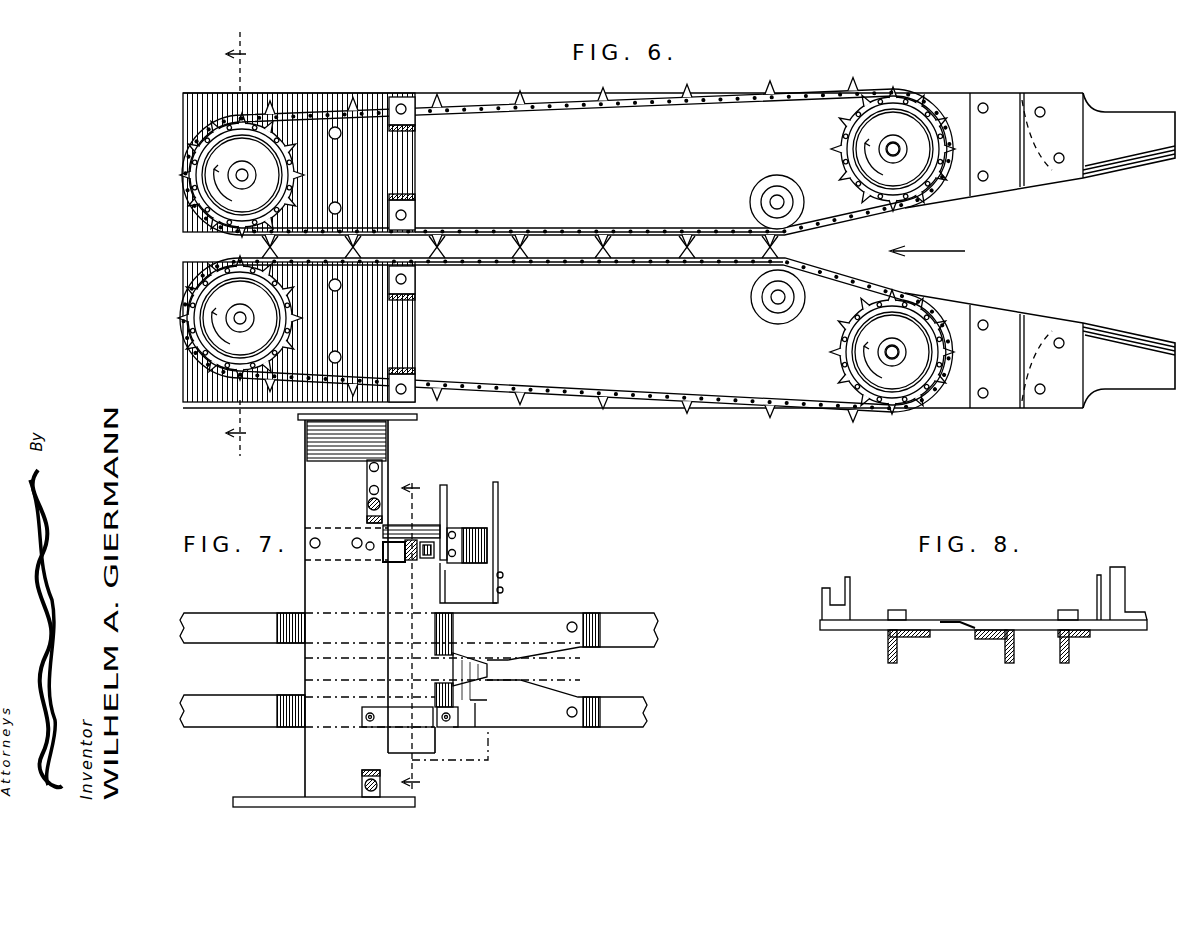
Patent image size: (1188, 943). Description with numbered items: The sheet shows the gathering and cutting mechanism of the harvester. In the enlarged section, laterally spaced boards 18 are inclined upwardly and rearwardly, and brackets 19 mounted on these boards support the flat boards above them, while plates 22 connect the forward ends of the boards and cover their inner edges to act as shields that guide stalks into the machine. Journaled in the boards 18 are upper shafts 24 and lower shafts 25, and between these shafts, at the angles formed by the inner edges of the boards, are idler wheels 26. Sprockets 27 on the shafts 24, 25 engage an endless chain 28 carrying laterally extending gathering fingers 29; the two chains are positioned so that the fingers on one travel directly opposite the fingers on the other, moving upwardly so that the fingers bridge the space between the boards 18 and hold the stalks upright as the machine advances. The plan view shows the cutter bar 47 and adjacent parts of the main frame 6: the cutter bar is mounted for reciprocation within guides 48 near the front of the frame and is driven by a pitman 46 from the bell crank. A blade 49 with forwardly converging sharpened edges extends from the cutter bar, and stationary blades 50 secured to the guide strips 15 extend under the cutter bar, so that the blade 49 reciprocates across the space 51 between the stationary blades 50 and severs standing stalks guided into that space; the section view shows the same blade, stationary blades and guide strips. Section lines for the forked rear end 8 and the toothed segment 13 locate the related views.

In FIG. 7, the main frame 6 is at (305, 475).
In FIG. 7, the forked rear end 8 is at (411, 634).
In FIG. 6, the toothed segment 13 is at (235, 254).
In FIG. 7, the guide strips 15 is at (660, 630).
In FIG. 8, the guide strips 15 is at (888, 656).
In FIG. 6, the boards 18 is at (633, 250).
In FIG. 6, the brackets 19 is at (405, 196).
In FIG. 6, the plates 22 is at (1130, 170).
In FIG. 6, the upper shafts 24 is at (236, 178).
In FIG. 6, the lower shafts 25 is at (896, 146).
In FIG. 6, the idler wheels 26 is at (779, 196).
In FIG. 6, the sprockets 27 is at (870, 124).
In FIG. 6, the endless chain 28 is at (730, 103).
In FIG. 6, the gathering fingers 29 is at (537, 86).
In FIG. 7, the pitman 46 is at (448, 503).
In FIG. 7, the cutter bar 47 is at (432, 527).
In FIG. 7, the guides 48 is at (397, 566).
In FIG. 7, the blade 49 is at (468, 668).
In FIG. 8, the blade 49 is at (952, 624).
In FIG. 7, the stationary blades 50 is at (553, 630).
In FIG. 8, the stationary blades 50 is at (952, 633).
In FIG. 7, the space 51 is at (505, 668).